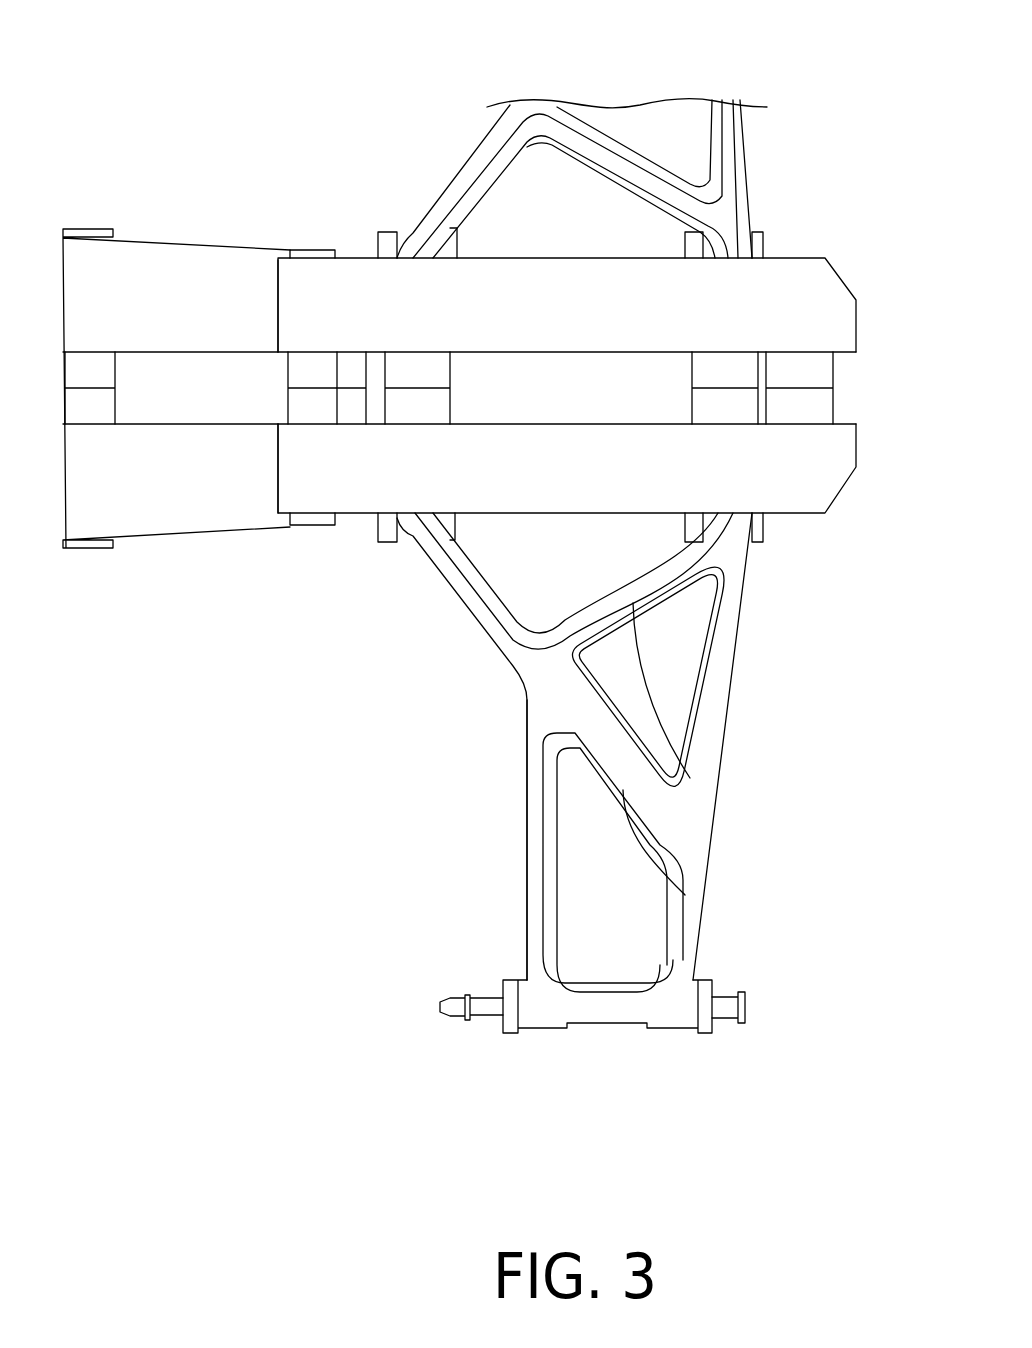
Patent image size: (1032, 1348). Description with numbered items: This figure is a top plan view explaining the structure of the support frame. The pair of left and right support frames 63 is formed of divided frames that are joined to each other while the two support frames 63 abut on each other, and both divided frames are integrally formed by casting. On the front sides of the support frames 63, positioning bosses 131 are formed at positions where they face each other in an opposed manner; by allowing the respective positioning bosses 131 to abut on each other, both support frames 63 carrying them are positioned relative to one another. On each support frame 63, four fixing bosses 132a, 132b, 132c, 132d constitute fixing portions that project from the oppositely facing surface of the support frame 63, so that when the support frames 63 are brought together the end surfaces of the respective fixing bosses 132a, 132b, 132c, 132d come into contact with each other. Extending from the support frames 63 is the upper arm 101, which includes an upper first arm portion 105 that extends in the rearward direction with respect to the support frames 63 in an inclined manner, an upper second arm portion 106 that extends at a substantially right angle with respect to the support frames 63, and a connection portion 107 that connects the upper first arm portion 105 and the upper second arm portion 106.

The support frame 63 is at (228, 522).
The upper arm 101 is at (637, 537).
The upper first arm portion 105 is at (535, 872).
The upper second arm portion 106 is at (708, 743).
The connection portion 107 is at (673, 864).
The positioning boss 131 is at (312, 408).
The fixing boss 132a is at (417, 408).
The fixing boss 132b is at (723, 405).
The fixing boss 132c is at (353, 407).
The fixing boss 132d is at (792, 405).